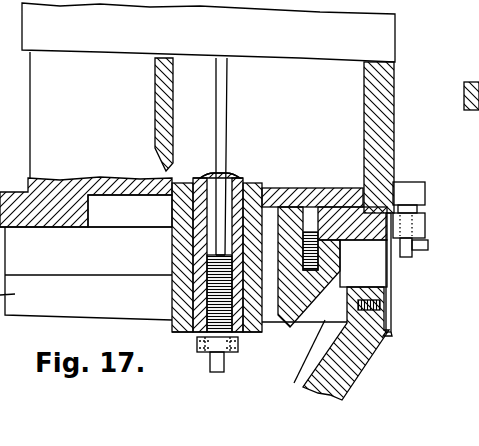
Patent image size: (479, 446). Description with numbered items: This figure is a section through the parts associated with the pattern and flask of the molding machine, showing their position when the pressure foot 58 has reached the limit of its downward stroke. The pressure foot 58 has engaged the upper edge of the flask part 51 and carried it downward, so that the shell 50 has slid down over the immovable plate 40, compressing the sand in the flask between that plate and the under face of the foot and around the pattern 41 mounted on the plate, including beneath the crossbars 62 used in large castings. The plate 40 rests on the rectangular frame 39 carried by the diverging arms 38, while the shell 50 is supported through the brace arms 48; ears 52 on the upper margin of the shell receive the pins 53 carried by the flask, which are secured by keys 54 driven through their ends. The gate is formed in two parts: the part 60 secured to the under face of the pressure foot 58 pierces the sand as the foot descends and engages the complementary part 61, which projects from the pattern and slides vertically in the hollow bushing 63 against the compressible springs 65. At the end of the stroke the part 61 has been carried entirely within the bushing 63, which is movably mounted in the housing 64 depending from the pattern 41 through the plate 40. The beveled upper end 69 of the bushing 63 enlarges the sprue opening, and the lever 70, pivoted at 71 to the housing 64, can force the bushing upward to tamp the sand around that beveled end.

The pressure foot 58 is at (384, 35).
The part of a two-part flask 51 is at (394, 143).
The rectangular shell 50 is at (391, 288).
The crossbars 62 is at (155, 79).
The part of the gate 60 is at (228, 83).
The hollow bushing 63 is at (172, 290).
The housing 64 is at (172, 253).
The beveled upper end 69 is at (237, 178).
The compressible springs 65 is at (170, 320).
The lever 70 is at (220, 362).
The pivot 71 is at (197, 347).
The complementary part of the gate 61 is at (172, 213).
The plate 40 is at (43, 245).
The pattern 41 is at (282, 187).
The diverging arms 38 is at (308, 345).
The rectangular frame 39 is at (302, 351).
The brace arms 48 is at (355, 369).
The ears 52 is at (424, 222).
The pins 53 is at (414, 256).
The keys 54 is at (428, 246).